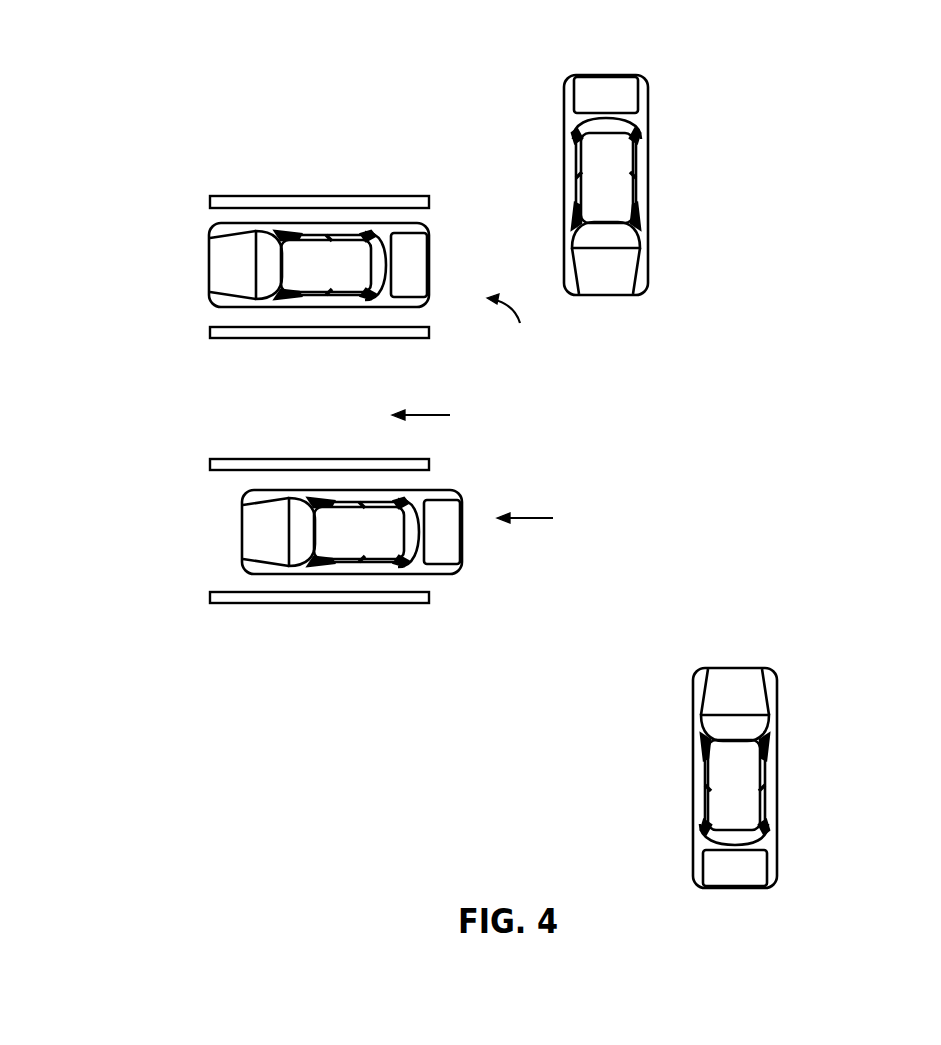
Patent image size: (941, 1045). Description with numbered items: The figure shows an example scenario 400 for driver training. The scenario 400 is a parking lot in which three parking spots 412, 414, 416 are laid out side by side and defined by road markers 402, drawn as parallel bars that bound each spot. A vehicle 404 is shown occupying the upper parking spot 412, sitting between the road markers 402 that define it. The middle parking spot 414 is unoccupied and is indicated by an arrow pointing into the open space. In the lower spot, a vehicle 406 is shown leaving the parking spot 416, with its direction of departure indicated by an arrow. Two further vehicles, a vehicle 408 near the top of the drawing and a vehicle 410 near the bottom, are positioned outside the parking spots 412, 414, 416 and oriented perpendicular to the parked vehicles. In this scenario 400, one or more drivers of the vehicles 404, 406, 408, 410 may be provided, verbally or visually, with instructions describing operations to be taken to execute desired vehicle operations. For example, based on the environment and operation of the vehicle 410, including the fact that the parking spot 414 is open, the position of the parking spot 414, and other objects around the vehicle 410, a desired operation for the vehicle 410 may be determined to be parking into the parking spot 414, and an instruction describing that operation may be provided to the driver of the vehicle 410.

The scenario 400 is at (842, 76).
The road markers 402 is at (210, 208).
The vehicle 404 is at (429, 262).
The vehicle 406 is at (463, 537).
The vehicle 408 is at (647, 222).
The vehicle 410 is at (777, 722).
The parking spot 412 is at (515, 332).
The parking spot 414 is at (449, 413).
The parking spot 416 is at (548, 518).